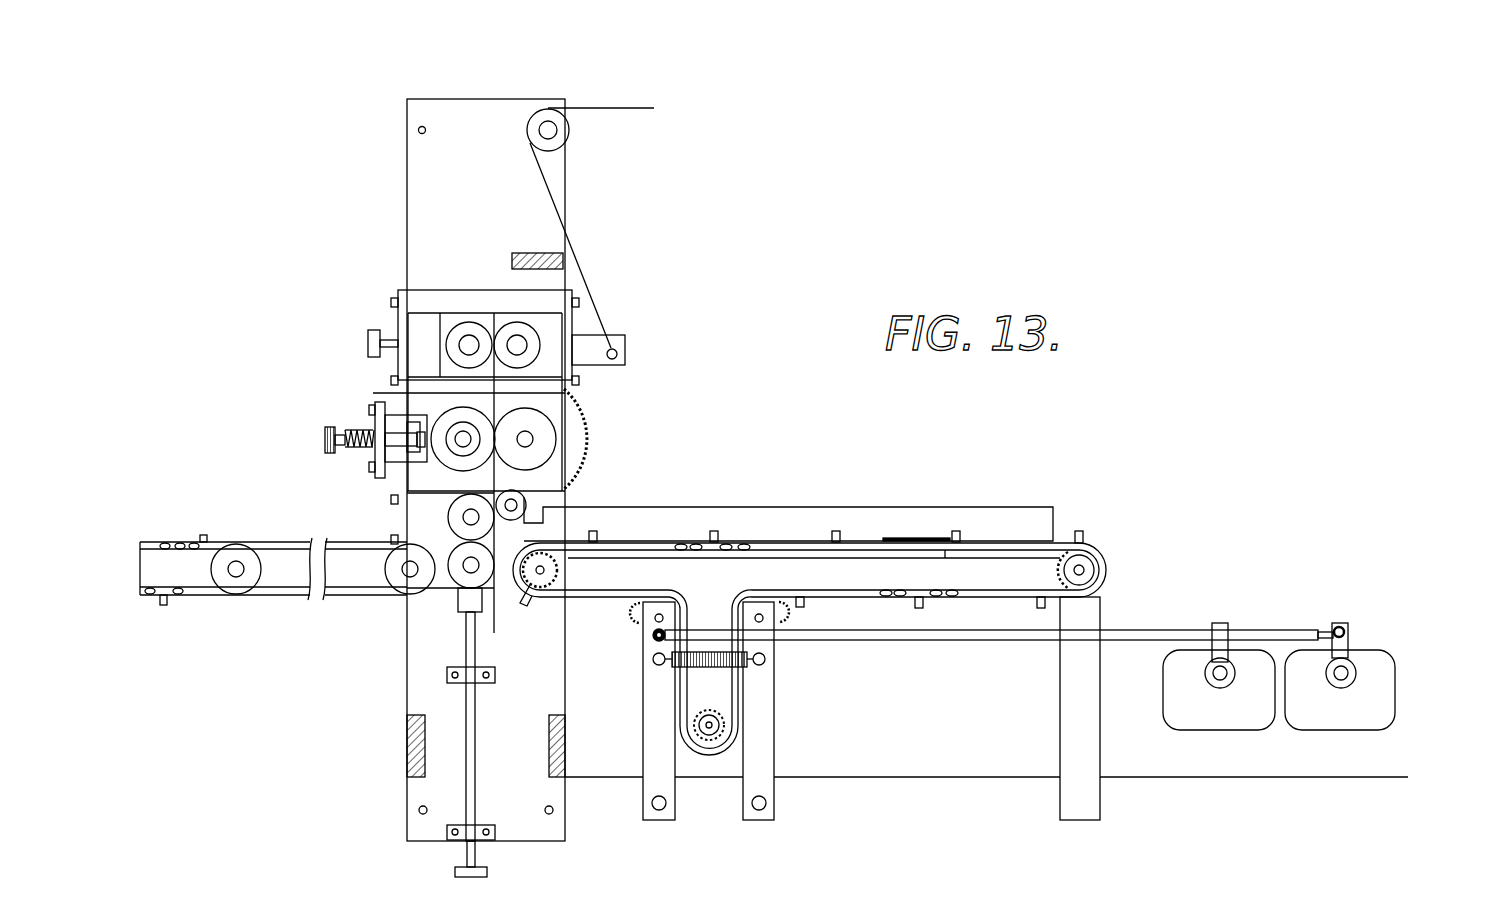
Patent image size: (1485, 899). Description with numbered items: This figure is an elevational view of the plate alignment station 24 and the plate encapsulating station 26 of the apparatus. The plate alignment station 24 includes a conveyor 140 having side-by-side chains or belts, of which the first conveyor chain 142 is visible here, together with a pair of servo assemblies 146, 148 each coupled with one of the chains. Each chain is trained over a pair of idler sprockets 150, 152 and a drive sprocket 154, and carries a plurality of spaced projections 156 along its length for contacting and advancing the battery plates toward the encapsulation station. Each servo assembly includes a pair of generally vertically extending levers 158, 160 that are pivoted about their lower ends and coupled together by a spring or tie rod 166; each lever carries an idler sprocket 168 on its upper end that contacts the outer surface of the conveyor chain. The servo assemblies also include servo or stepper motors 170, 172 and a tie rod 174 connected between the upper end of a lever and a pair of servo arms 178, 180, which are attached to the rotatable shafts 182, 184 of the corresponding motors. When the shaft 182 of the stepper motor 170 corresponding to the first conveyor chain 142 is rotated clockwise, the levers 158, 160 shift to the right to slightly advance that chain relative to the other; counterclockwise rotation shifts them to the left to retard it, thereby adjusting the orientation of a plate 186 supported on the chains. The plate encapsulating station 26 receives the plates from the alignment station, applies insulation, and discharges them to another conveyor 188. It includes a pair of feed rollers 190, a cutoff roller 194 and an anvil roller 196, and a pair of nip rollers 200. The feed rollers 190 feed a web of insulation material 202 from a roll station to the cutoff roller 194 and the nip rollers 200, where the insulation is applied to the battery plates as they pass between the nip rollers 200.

The plate alignment station 24 is at (782, 412).
The plate encapsulating station 26 is at (570, 96).
The conveyor 140 is at (1082, 492).
The first conveyor chain 142 is at (1090, 550).
The servo assembly 146 is at (1402, 638).
The servo assembly 148 is at (1178, 742).
The idler sprocket 150 is at (1090, 570).
The idler sprocket 152 is at (545, 584).
The drive sprocket 154 is at (710, 733).
The spaced projections 156 is at (594, 531).
The lever 158 is at (655, 730).
The lever 160 is at (770, 750).
The spring or tie rod 166 is at (724, 668).
The idler sprocket 168 is at (636, 618).
The servo or stepper motor 170 is at (1380, 718).
The servo or stepper motor 172 is at (1172, 704).
The tie rod 174 is at (970, 641).
The servo arm 178 is at (1350, 642).
The servo arm 180 is at (1208, 644).
The rotatable shaft 182 is at (1336, 678).
The rotatable shaft 184 is at (1224, 676).
The plate 186 is at (920, 538).
The conveyor 188 is at (270, 528).
The feed rollers 190 is at (516, 322).
The cutoff roller 194 is at (455, 416).
The anvil roller 196 is at (540, 432).
The nip rollers 200 is at (456, 550).
The web of insulation material 202 is at (590, 282).